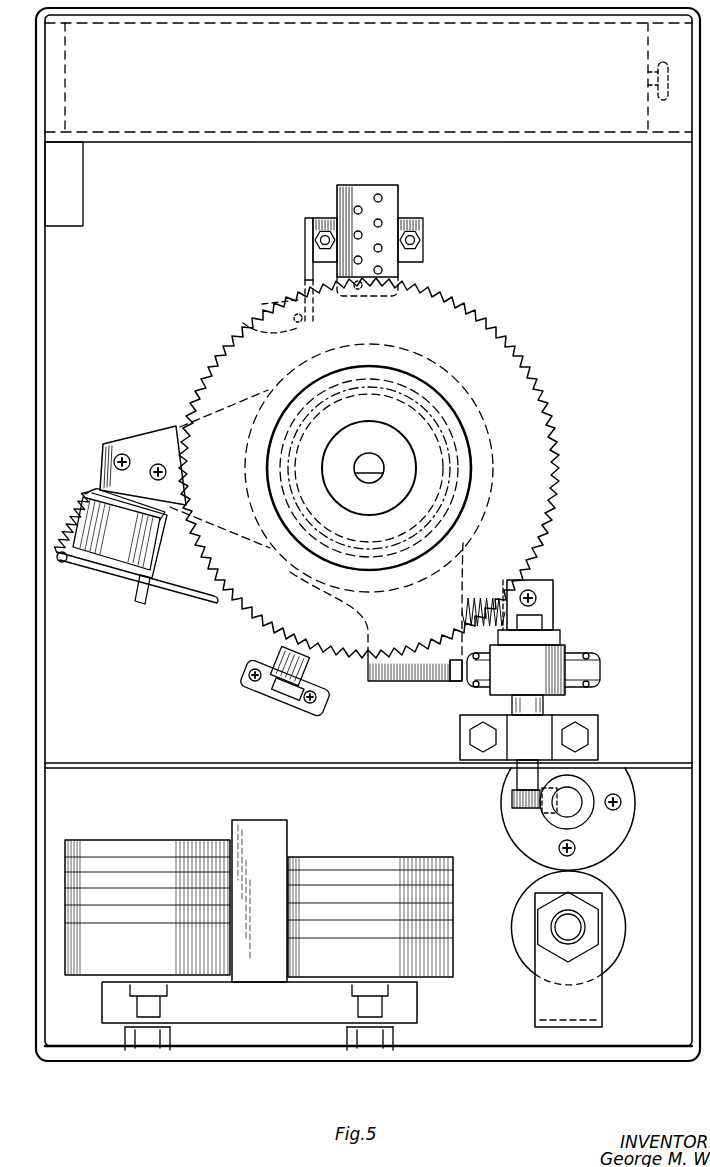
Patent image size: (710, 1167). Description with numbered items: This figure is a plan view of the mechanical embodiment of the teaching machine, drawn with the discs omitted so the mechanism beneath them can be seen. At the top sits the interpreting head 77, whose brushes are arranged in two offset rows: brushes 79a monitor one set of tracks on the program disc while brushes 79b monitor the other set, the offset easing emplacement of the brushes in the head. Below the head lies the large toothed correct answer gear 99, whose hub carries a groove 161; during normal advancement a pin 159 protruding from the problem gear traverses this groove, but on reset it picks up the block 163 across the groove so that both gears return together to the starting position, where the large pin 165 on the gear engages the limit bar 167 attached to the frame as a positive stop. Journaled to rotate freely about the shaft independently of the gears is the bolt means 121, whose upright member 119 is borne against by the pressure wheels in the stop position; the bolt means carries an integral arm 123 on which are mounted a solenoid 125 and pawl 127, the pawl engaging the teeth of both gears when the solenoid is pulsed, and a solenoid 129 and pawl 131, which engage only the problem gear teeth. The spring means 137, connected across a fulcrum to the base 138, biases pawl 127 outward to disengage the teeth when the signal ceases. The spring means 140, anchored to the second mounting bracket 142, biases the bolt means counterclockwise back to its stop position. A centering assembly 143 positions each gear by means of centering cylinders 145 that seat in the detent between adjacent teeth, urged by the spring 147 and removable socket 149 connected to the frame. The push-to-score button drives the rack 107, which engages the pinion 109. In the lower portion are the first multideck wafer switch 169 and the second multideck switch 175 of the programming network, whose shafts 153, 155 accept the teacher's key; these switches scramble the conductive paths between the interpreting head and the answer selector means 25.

The answer selector means 25 is at (634, 971).
The interpreting head 77 is at (400, 200).
The brushes 79a is at (354, 210).
The brushes 79b is at (378, 194).
The correct answer gear 99 is at (213, 366).
The rack 107 is at (570, 806).
The pinion 109 is at (511, 800).
The upright member 119 is at (452, 681).
The bolt means 121 is at (420, 680).
The arm 123 is at (158, 440).
The solenoid 125 is at (123, 553).
The pawl 127 is at (190, 603).
The solenoid 129 is at (148, 542).
The pawl 131 is at (228, 597).
The spring means 137 is at (65, 525).
The base 138 is at (108, 490).
The spring means 140 is at (485, 600).
The second mounting bracket 142 is at (552, 595).
The centering assembly 143 is at (282, 690).
The centering cylinders 145 is at (296, 652).
The spring 147 is at (305, 680).
The removable socket 149 is at (310, 706).
The shaft 153 is at (148, 1010).
The shaft 155 is at (372, 1010).
The pin 159 is at (365, 380).
The groove 161 is at (318, 424).
The block 163 is at (378, 383).
The large pin 165 is at (258, 318).
The limit bar 167 is at (270, 300).
The first multideck wafer switch 169 is at (208, 840).
The second multideck switch 175 is at (348, 866).